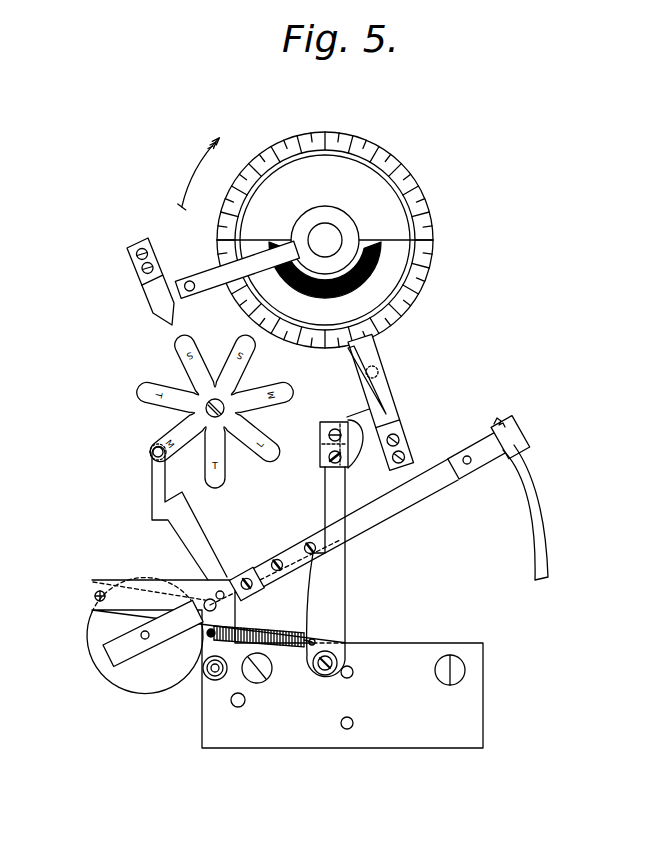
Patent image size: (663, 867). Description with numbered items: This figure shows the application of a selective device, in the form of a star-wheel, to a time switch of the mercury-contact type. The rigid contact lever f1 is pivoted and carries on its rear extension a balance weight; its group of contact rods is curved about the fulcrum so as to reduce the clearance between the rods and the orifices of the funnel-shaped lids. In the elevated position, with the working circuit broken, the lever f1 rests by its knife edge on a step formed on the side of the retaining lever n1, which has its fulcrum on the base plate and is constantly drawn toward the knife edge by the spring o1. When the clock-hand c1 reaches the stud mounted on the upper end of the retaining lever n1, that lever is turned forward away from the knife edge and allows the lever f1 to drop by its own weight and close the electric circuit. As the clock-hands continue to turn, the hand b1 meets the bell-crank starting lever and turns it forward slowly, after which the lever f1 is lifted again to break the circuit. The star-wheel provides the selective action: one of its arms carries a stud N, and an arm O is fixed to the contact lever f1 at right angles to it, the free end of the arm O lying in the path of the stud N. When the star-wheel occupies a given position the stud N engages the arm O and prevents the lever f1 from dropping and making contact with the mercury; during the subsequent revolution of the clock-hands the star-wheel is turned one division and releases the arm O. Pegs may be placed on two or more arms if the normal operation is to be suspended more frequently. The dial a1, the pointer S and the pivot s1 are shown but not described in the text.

The 24-hour time dial a1 is at (413, 176).
The hand b1 is at (200, 276).
The clock-hand c1 is at (372, 352).
The pointer spring S is at (356, 368).
The stud N is at (157, 447).
The arm O is at (158, 500).
The pivot screw s1 is at (203, 590).
The spring o1 is at (262, 627).
The retaining lever n1 is at (338, 577).
The contact lever f1 is at (418, 488).